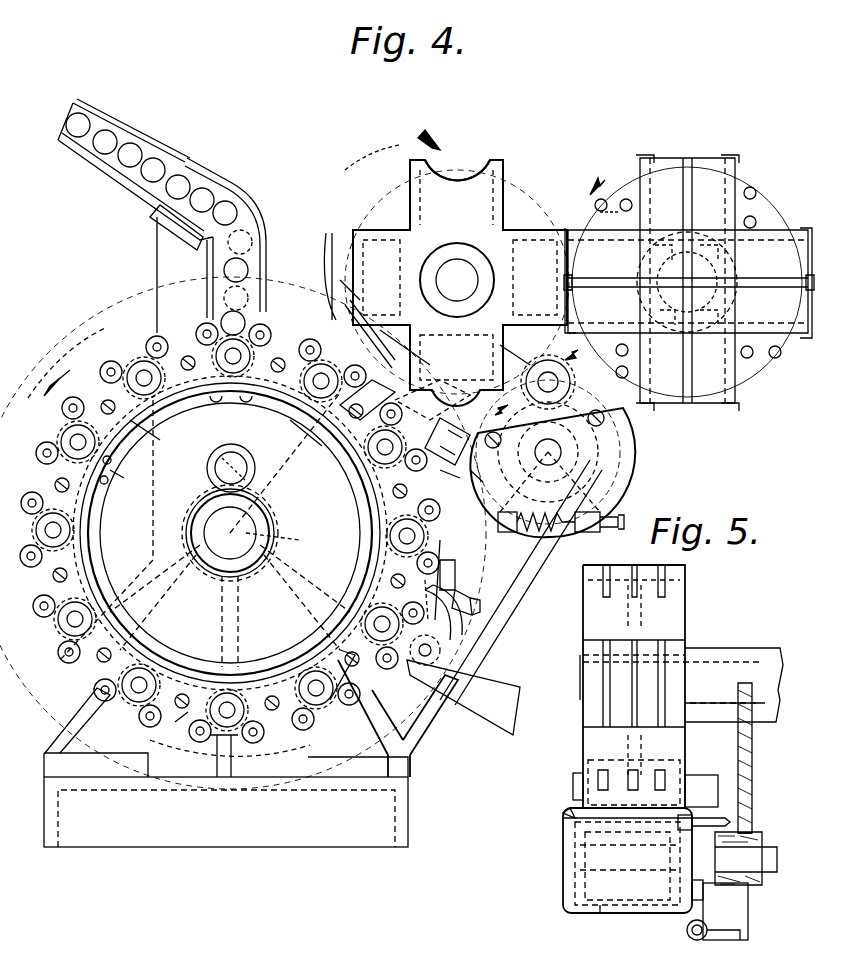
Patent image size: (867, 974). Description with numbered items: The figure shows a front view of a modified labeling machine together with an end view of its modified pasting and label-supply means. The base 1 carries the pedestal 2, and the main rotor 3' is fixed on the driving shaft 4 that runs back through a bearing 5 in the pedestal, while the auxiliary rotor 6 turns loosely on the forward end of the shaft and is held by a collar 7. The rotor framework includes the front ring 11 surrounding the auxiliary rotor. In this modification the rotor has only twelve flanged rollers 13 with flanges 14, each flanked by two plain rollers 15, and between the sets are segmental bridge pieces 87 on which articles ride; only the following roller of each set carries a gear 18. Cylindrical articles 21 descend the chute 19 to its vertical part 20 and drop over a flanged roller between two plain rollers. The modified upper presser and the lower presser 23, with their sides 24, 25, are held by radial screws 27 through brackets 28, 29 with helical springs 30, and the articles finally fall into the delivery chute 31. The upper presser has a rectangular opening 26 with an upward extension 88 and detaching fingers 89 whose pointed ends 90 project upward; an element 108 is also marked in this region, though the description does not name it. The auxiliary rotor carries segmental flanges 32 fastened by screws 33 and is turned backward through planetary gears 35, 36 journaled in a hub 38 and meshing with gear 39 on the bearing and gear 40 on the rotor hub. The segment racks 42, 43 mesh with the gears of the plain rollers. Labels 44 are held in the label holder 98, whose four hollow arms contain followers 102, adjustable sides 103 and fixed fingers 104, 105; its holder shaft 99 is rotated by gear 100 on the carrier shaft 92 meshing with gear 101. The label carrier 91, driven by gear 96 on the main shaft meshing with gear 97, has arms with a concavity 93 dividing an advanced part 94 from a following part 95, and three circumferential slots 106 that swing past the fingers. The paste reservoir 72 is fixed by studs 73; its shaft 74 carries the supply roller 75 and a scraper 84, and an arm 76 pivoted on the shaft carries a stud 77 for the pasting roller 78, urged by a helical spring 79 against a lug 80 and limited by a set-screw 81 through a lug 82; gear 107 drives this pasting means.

In FIG. 4, the base 1 is at (400, 784).
In FIG. 4, the pedestal 2 is at (418, 738).
In FIG. 5, the pedestal 2 is at (752, 763).
In FIG. 4, the main rotor 3' is at (345, 699).
In FIG. 4, the driving shaft 4 is at (246, 520).
In FIG. 4, the bearing 5 is at (262, 490).
In FIG. 4, the auxiliary rotor 6 is at (368, 545).
In FIG. 4, the collar 7 is at (278, 522).
In FIG. 4, the front ring 11 is at (173, 721).
In FIG. 4, the flanged roller 13 is at (135, 362).
In FIG. 4, the flange 14 is at (153, 340).
In FIG. 4, the plain roller 15 is at (160, 337).
In FIG. 4, the gear 18 is at (290, 385).
In FIG. 4, the chute 19 is at (145, 162).
In FIG. 4, the vertical part 20 is at (262, 255).
In FIG. 4, the cylindrical article 21 is at (242, 220).
In FIG. 4, the presser 23 is at (450, 572).
In FIG. 4, the side 24 is at (367, 400).
In FIG. 4, the side 25 is at (445, 530).
In FIG. 4, the rectangular opening 26 is at (411, 342).
In FIG. 4, the radial screw 27 is at (462, 430).
In FIG. 4, the bracket 28 is at (487, 591).
In FIG. 4, the bracket 29 is at (458, 481).
In FIG. 4, the helical spring 30 is at (465, 586).
In FIG. 4, the delivery chute 31 is at (470, 700).
In FIG. 4, the segmental flange 32 is at (160, 432).
In FIG. 4, the screw 33 is at (124, 472).
In FIG. 4, the planetary gear 35 is at (214, 464).
In FIG. 4, the planetary gear 36 is at (228, 446).
In FIG. 4, the hub 38 is at (248, 466).
In FIG. 4, the gear 39 is at (186, 514).
In FIG. 4, the gear 40 is at (205, 533).
In FIG. 4, the segment rack 42 is at (313, 439).
In FIG. 4, the segment rack 43 is at (455, 628).
In FIG. 4, the label 44 is at (447, 158).
In FIG. 4, the paste reservoir 72 is at (625, 460).
In FIG. 5, the paste reservoir 72 is at (565, 888).
In FIG. 4, the stud 73 is at (555, 433).
In FIG. 5, the stud 73 is at (565, 822).
In FIG. 4, the shaft 74 is at (562, 458).
In FIG. 5, the shaft 74 is at (765, 850).
In FIG. 4, the supply roller 75 is at (551, 452).
In FIG. 5, the supply roller 75 is at (600, 913).
In FIG. 4, the arm 76 is at (555, 530).
In FIG. 5, the arm 76 is at (700, 915).
In FIG. 4, the stud 77 is at (538, 384).
In FIG. 5, the stud 77 is at (573, 790).
In FIG. 4, the pasting roller 78 is at (543, 376).
In FIG. 5, the pasting roller 78 is at (598, 770).
In FIG. 4, the helical spring 79 is at (515, 585).
In FIG. 4, the lug 80 is at (503, 509).
In FIG. 4, the set-screw 81 is at (618, 514).
In FIG. 5, the set-screw 81 is at (692, 938).
In FIG. 4, the lug 82 is at (592, 529).
In FIG. 5, the lug 82 is at (715, 935).
In FIG. 4, the scraper 84 is at (487, 483).
In FIG. 5, the scraper 84 is at (560, 811).
In FIG. 4, the segmental bridge piece 87 is at (178, 335).
In FIG. 4, the upward extension 88 is at (328, 280).
In FIG. 4, the detaching finger 89 is at (375, 324).
In FIG. 4, the pointed end 90 is at (360, 295).
In FIG. 4, the label carrier 91 is at (515, 200).
In FIG. 5, the label carrier 91 is at (687, 615).
In FIG. 4, the carrier shaft 92 is at (470, 278).
In FIG. 5, the carrier shaft 92 is at (582, 670).
In FIG. 4, the concavity 93 is at (458, 162).
In FIG. 5, the concavity 93 is at (690, 652).
In FIG. 4, the advanced part 94 is at (425, 160).
In FIG. 5, the advanced part 94 is at (590, 645).
In FIG. 4, the following part 95 is at (505, 165).
In FIG. 5, the following part 95 is at (590, 717).
In FIG. 4, the gear 96 is at (112, 310).
In FIG. 4, the gear 97 is at (402, 196).
In FIG. 4, the label holder 98 is at (690, 160).
In FIG. 4, the holder shaft 99 is at (700, 275).
In FIG. 4, the gear 100 is at (578, 184).
In FIG. 4, the gear 101 is at (589, 207).
In FIG. 4, the follower 102 is at (696, 282).
In FIG. 4, the adjustable side 103 is at (697, 276).
In FIG. 4, the fixed finger 104 is at (645, 158).
In FIG. 4, the fixed finger 105 is at (692, 162).
In FIG. 4, the circumferential slot 106 is at (534, 270).
In FIG. 5, the circumferential slot 106 is at (637, 568).
In FIG. 5, the gear 107 is at (606, 586).
In FIG. 4, the arc 108 is at (421, 252).